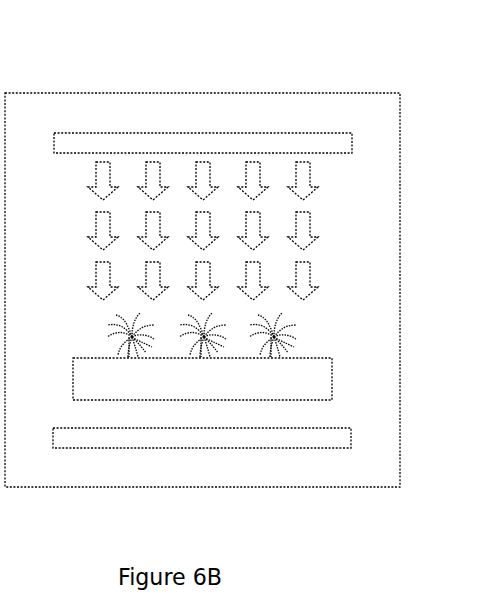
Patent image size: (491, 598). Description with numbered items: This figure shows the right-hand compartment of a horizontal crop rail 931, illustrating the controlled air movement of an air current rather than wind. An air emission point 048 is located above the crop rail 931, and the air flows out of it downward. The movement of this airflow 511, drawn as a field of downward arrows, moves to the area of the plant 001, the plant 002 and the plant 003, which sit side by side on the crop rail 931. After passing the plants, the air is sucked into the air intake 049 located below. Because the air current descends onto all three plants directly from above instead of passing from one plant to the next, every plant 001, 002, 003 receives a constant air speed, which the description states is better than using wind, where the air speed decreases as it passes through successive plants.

The air emission point 048 is at (325, 133).
The airflow 511 is at (310, 231).
The crop rail 931 is at (332, 380).
The air intake 049 is at (328, 448).
The plant 001 is at (117, 348).
The plant 002 is at (190, 348).
The plant 003 is at (257, 348).